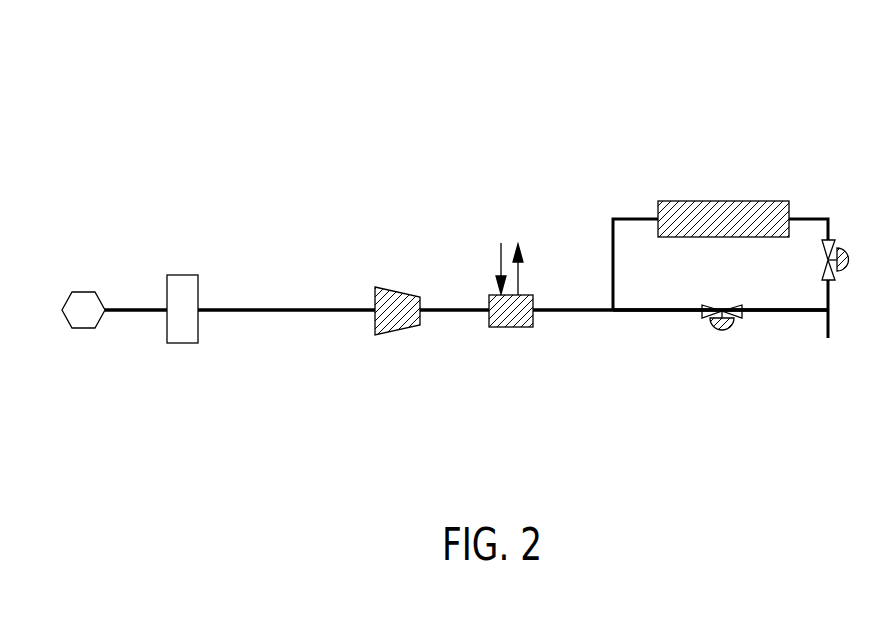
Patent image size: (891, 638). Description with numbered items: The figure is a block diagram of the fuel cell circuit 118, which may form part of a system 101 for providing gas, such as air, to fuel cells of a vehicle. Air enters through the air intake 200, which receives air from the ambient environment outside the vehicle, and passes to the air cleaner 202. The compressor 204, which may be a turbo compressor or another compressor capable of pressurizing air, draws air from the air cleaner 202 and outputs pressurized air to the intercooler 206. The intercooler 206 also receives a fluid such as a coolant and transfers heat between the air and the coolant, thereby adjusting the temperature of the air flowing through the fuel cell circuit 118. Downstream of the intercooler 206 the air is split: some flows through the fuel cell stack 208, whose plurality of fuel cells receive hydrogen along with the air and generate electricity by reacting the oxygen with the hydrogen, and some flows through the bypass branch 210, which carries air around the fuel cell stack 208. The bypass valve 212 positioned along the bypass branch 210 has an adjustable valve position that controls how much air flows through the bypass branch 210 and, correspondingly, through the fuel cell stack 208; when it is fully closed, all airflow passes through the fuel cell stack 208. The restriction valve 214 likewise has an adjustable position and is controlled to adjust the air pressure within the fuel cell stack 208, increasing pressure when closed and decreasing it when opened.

The system 101 is at (104, 102).
The fuel cell circuit 118 is at (75, 204).
The air intake 200 is at (80, 329).
The air cleaner 202 is at (183, 344).
The compressor 204 is at (397, 336).
The intercooler 206 is at (517, 328).
The fuel cell stack 208 is at (700, 200).
The bypass branch 210 is at (665, 313).
The bypass valve 212 is at (730, 331).
The restriction valve 214 is at (840, 243).